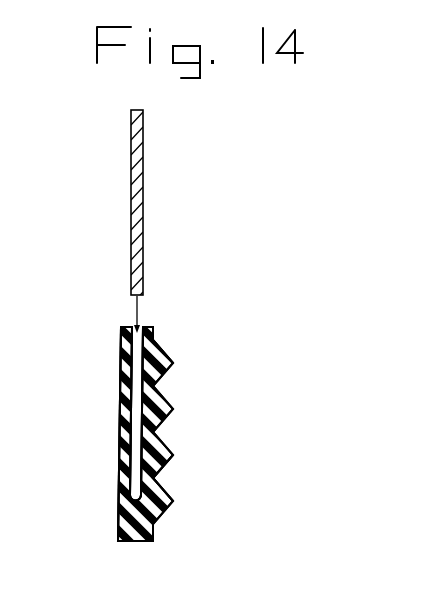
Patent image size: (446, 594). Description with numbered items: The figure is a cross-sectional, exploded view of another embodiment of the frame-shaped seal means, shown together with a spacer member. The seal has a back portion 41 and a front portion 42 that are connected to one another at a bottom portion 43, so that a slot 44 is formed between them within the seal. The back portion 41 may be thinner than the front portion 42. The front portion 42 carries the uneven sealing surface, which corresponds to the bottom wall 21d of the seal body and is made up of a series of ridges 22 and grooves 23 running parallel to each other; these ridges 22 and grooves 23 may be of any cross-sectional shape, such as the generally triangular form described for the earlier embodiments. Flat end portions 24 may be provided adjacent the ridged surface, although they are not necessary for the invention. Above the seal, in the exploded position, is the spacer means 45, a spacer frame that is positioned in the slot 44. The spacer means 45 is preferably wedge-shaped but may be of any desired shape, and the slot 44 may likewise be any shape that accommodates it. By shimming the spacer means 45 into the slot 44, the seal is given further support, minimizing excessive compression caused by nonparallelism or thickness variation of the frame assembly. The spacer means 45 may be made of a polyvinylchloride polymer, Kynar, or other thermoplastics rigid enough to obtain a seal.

The bottom wall 21d is at (274, 426).
The ridges 22 is at (175, 412).
The grooves 23 is at (157, 480).
The flat end portions 24 is at (154, 332).
The back portion 41 is at (128, 410).
The front portion 42 is at (170, 361).
The bottom portion 43 is at (142, 541).
The slot 44 is at (135, 365).
The spacer means 45 is at (138, 265).